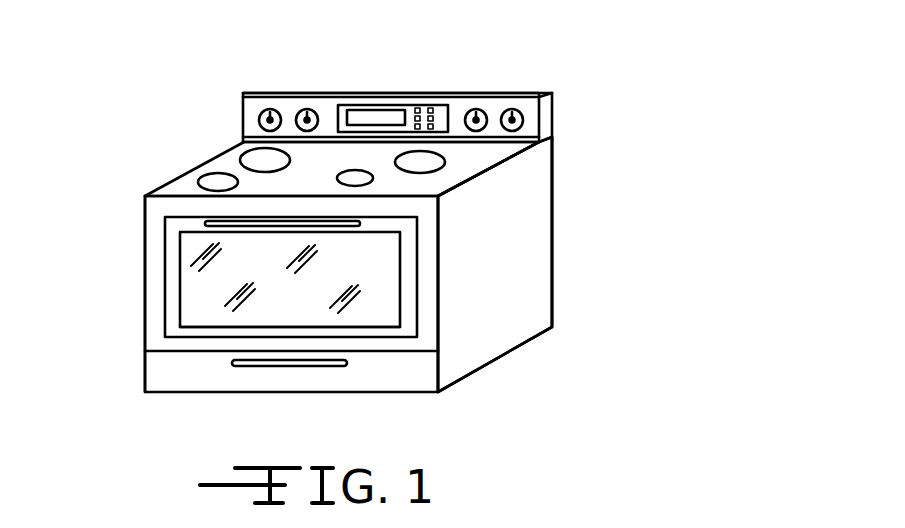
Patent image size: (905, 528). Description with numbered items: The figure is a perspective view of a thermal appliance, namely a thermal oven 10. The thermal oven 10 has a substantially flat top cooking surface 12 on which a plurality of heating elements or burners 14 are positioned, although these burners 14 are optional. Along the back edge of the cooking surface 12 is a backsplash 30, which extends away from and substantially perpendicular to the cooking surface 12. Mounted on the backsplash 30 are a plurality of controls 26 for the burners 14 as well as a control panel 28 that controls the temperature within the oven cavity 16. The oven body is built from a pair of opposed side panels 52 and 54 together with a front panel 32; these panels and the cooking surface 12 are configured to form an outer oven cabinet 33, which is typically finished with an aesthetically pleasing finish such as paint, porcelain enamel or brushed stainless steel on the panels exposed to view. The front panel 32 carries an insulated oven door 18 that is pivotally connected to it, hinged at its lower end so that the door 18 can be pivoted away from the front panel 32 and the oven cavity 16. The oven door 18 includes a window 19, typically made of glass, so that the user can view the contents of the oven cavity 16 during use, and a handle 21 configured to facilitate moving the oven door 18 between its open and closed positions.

The thermal oven 10 is at (573, 70).
The top cooking surface 12 is at (225, 157).
The heating elements or burners 14 is at (240, 152).
The oven cavity 16 is at (193, 285).
The oven door 18 is at (165, 313).
The window 19 is at (212, 330).
The handle 21 is at (213, 225).
The controls 26 is at (307, 109).
The control panel 28 is at (372, 105).
The backsplash 30 is at (545, 115).
The front panel 32 is at (428, 332).
The outer oven cabinet 33 is at (557, 300).
The side panel 52 is at (145, 282).
The side panel 54 is at (510, 242).